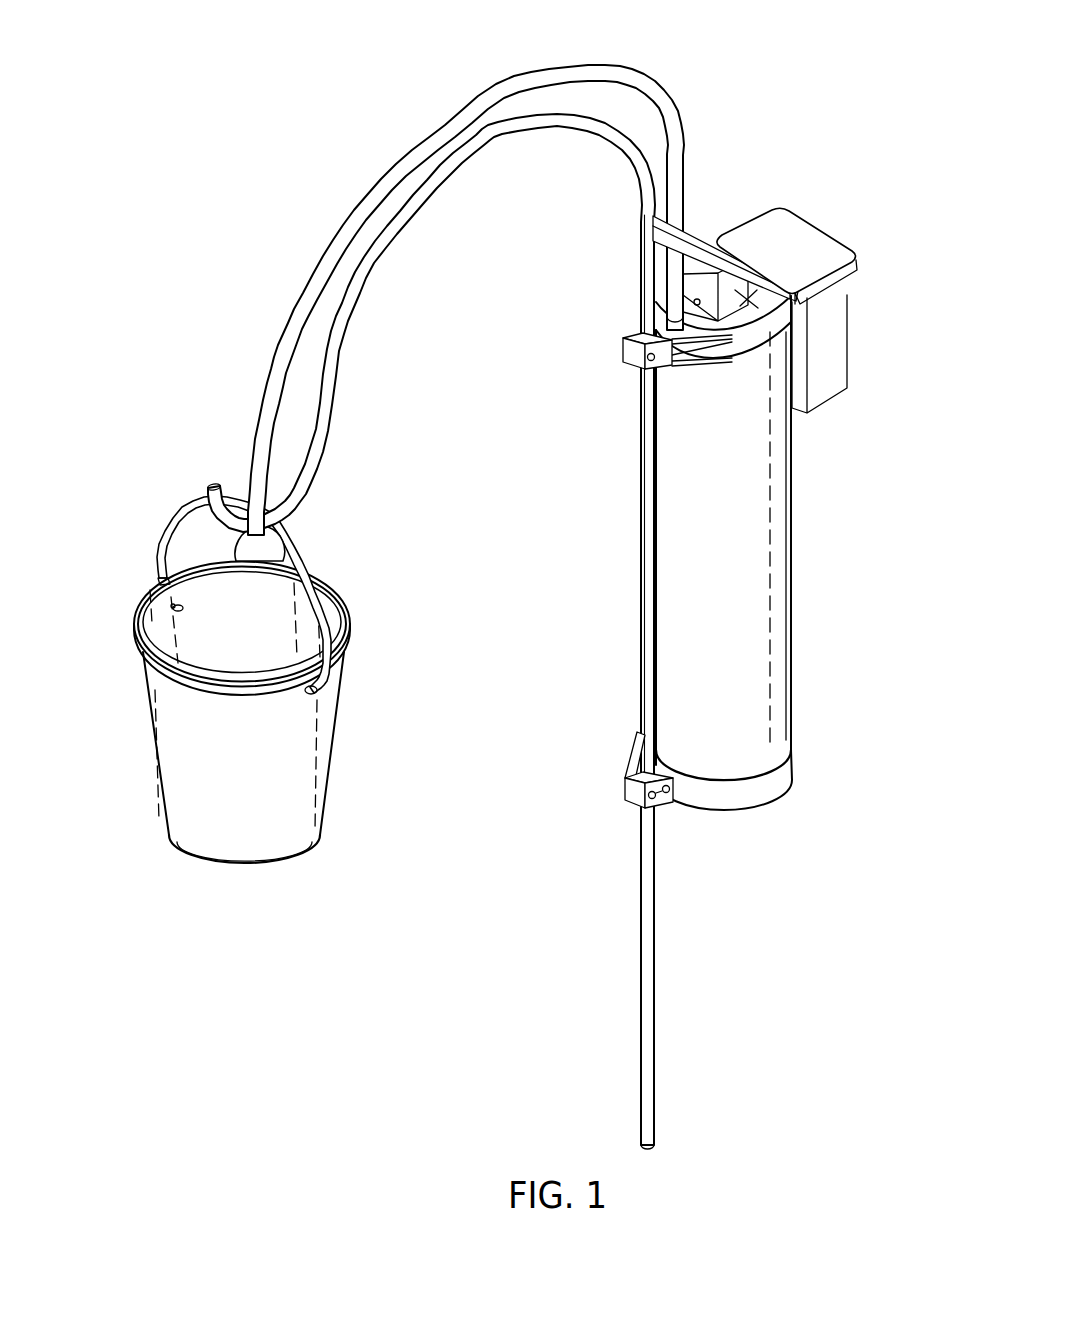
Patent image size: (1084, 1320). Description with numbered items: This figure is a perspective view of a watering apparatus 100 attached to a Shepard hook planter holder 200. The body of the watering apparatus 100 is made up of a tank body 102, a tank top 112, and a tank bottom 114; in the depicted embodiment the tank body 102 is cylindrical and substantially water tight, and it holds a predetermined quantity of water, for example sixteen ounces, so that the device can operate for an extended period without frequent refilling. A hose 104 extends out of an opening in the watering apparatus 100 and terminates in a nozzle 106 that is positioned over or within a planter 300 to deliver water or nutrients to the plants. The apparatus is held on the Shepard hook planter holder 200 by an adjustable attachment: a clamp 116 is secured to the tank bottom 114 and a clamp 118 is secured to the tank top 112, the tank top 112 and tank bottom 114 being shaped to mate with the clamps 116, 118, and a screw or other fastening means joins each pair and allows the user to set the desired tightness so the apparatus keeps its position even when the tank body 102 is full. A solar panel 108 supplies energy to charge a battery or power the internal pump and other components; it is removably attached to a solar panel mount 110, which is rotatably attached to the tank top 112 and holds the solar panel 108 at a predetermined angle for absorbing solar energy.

The watering apparatus 100 is at (833, 213).
The tank body 102 is at (750, 522).
The hose 104 is at (653, 75).
The nozzle 106 is at (262, 549).
The solar panel 108 is at (705, 225).
The solar panel mount 110 is at (800, 306).
The tank top 112 is at (755, 338).
The tank bottom 114 is at (765, 785).
The clamp 116 is at (662, 808).
The clamp 118 is at (625, 352).
The Shepard hook planter holder 200 is at (323, 344).
The planter 300 is at (202, 750).